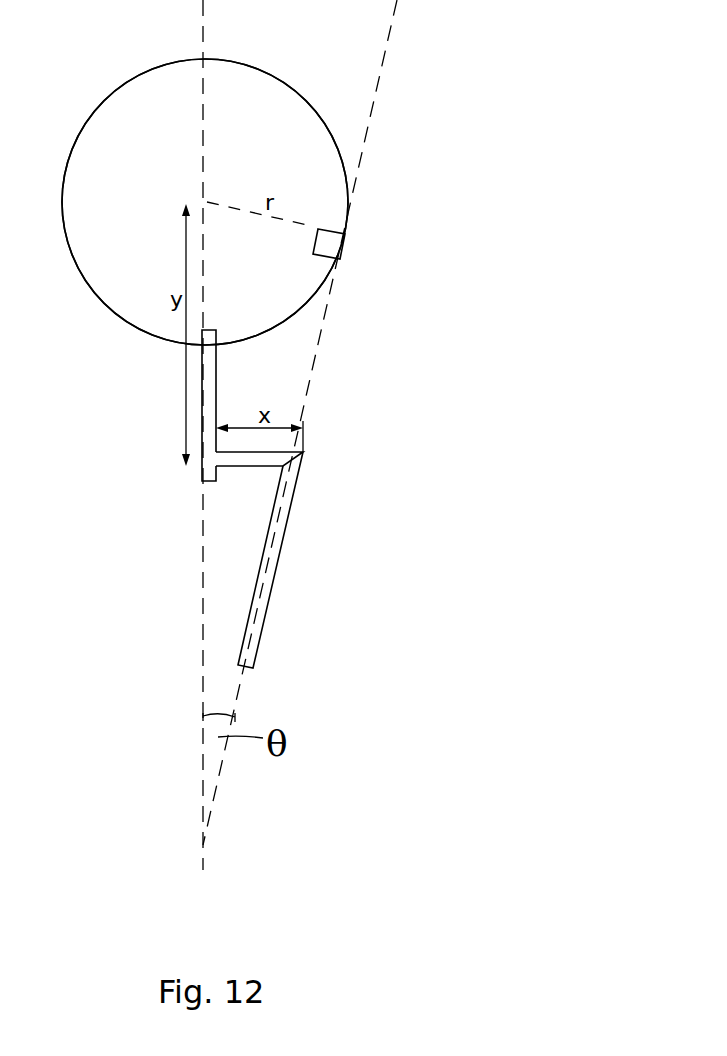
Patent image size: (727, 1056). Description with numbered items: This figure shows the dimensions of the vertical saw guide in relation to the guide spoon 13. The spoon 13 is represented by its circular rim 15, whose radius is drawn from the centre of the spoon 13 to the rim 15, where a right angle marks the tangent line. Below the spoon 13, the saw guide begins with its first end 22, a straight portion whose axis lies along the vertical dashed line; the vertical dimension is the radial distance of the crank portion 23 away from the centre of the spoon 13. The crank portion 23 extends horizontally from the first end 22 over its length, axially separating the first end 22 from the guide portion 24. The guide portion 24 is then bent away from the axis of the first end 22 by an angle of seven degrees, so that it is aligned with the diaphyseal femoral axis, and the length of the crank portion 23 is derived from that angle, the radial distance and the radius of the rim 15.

The guide spoon 13 is at (277, 150).
The rim 15 is at (273, 72).
The first end 22 is at (217, 372).
The crank portion 23 is at (247, 467).
The guide portion 24 is at (262, 618).